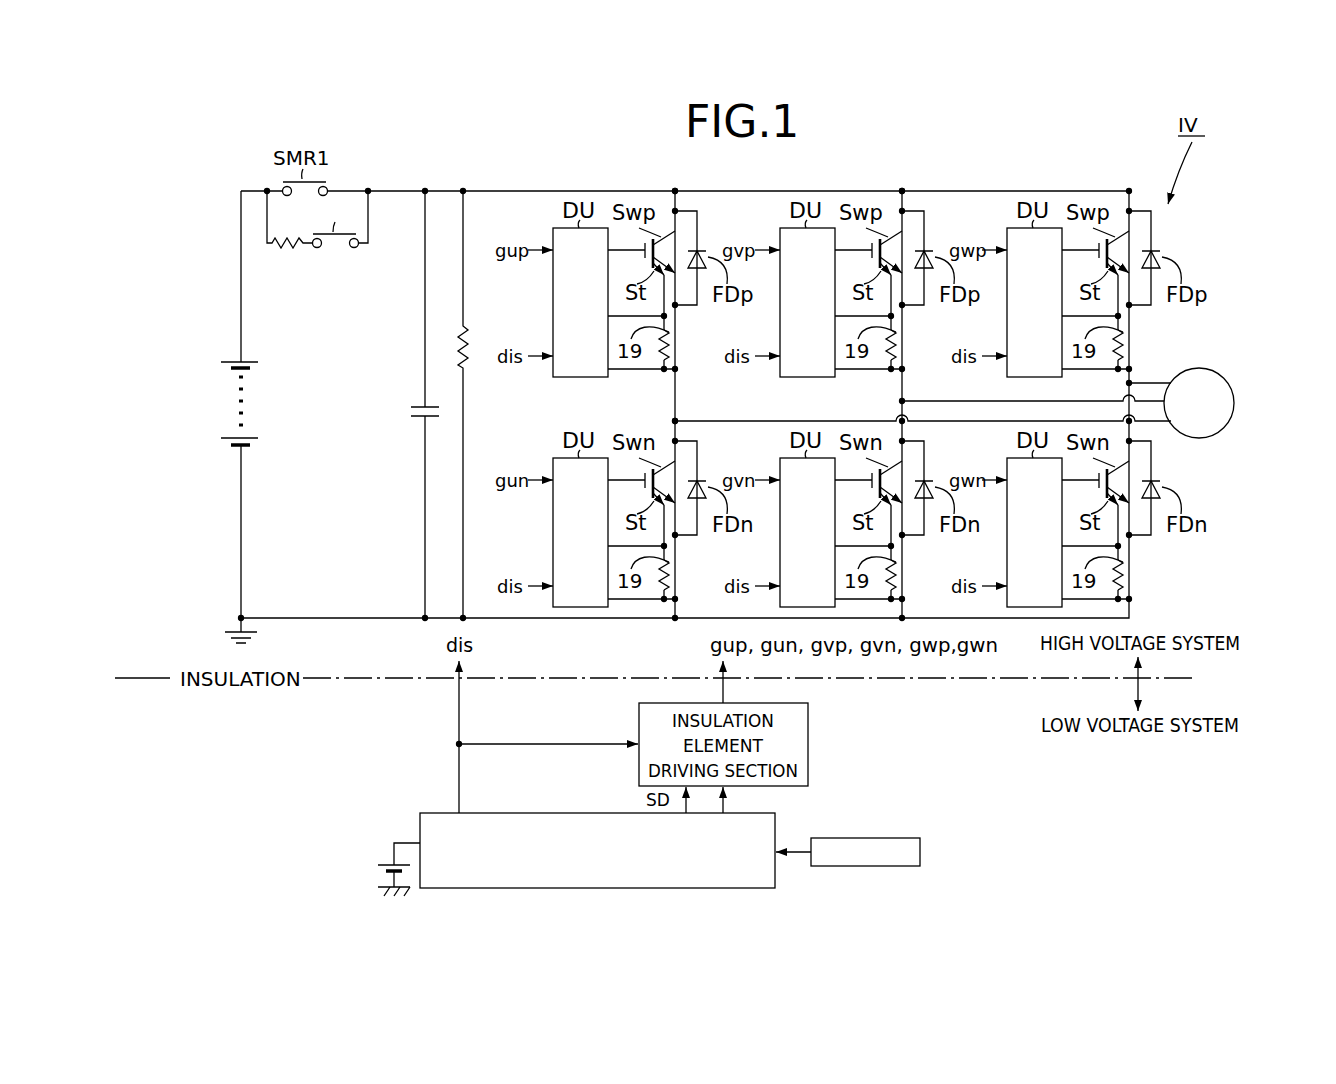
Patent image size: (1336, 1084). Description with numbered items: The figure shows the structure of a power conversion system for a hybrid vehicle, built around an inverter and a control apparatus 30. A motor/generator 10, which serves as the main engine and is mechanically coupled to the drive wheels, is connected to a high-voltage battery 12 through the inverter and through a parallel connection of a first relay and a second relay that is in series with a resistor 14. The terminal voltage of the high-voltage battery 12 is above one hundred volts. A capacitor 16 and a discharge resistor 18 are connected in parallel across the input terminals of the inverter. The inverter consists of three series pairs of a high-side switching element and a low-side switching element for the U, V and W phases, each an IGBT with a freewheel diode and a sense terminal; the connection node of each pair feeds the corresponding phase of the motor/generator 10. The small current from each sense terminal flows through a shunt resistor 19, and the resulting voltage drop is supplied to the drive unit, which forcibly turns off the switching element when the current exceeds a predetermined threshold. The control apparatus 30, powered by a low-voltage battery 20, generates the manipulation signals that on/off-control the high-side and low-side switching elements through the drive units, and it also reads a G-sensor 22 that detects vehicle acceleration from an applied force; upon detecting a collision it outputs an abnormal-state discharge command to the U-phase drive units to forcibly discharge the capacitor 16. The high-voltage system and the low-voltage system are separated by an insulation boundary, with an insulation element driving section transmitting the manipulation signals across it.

The motor/generator 10 is at (1224, 378).
The high-voltage battery 12 is at (252, 360).
The resistor 14 is at (286, 246).
The capacitor 16 is at (418, 405).
The discharge resistor 18 is at (462, 330).
The shunt resistor 19 is at (870, 460).
The low-voltage battery 20 is at (388, 862).
The G-sensor 22 is at (868, 838).
The control apparatus 30 is at (567, 812).